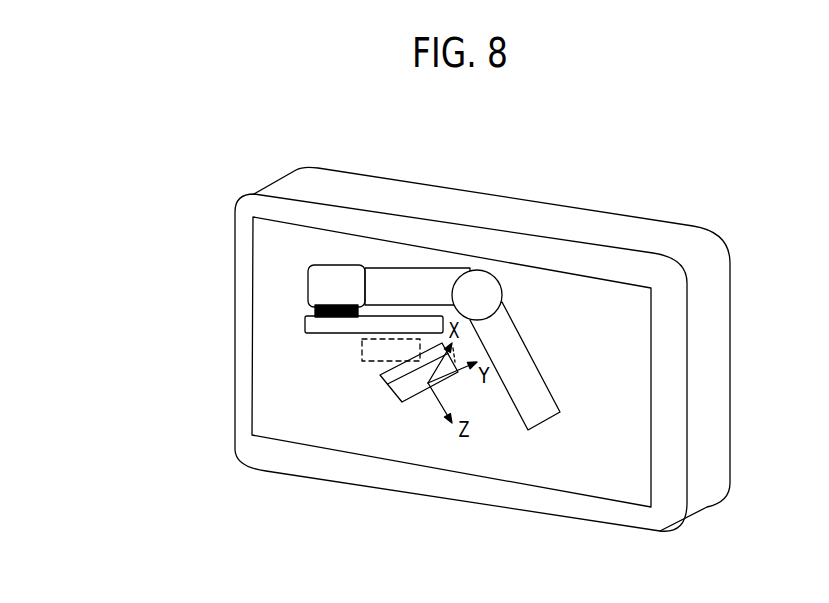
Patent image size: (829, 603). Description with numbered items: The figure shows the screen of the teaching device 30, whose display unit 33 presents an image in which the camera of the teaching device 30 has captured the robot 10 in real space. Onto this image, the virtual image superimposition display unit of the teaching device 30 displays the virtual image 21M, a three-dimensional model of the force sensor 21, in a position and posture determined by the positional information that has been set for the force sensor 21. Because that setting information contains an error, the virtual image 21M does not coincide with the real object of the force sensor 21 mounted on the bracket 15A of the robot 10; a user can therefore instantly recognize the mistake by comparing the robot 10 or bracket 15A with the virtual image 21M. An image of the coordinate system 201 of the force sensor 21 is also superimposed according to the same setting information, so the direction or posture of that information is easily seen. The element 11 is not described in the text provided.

The robot 10 is at (411, 260).
The hand 11 is at (312, 310).
The bracket 15A is at (304, 321).
The force sensor 21 is at (365, 346).
The virtual image 21M is at (398, 394).
The teaching device 30 is at (627, 216).
The display unit 33 is at (623, 470).
The coordinate system 201 is at (458, 401).